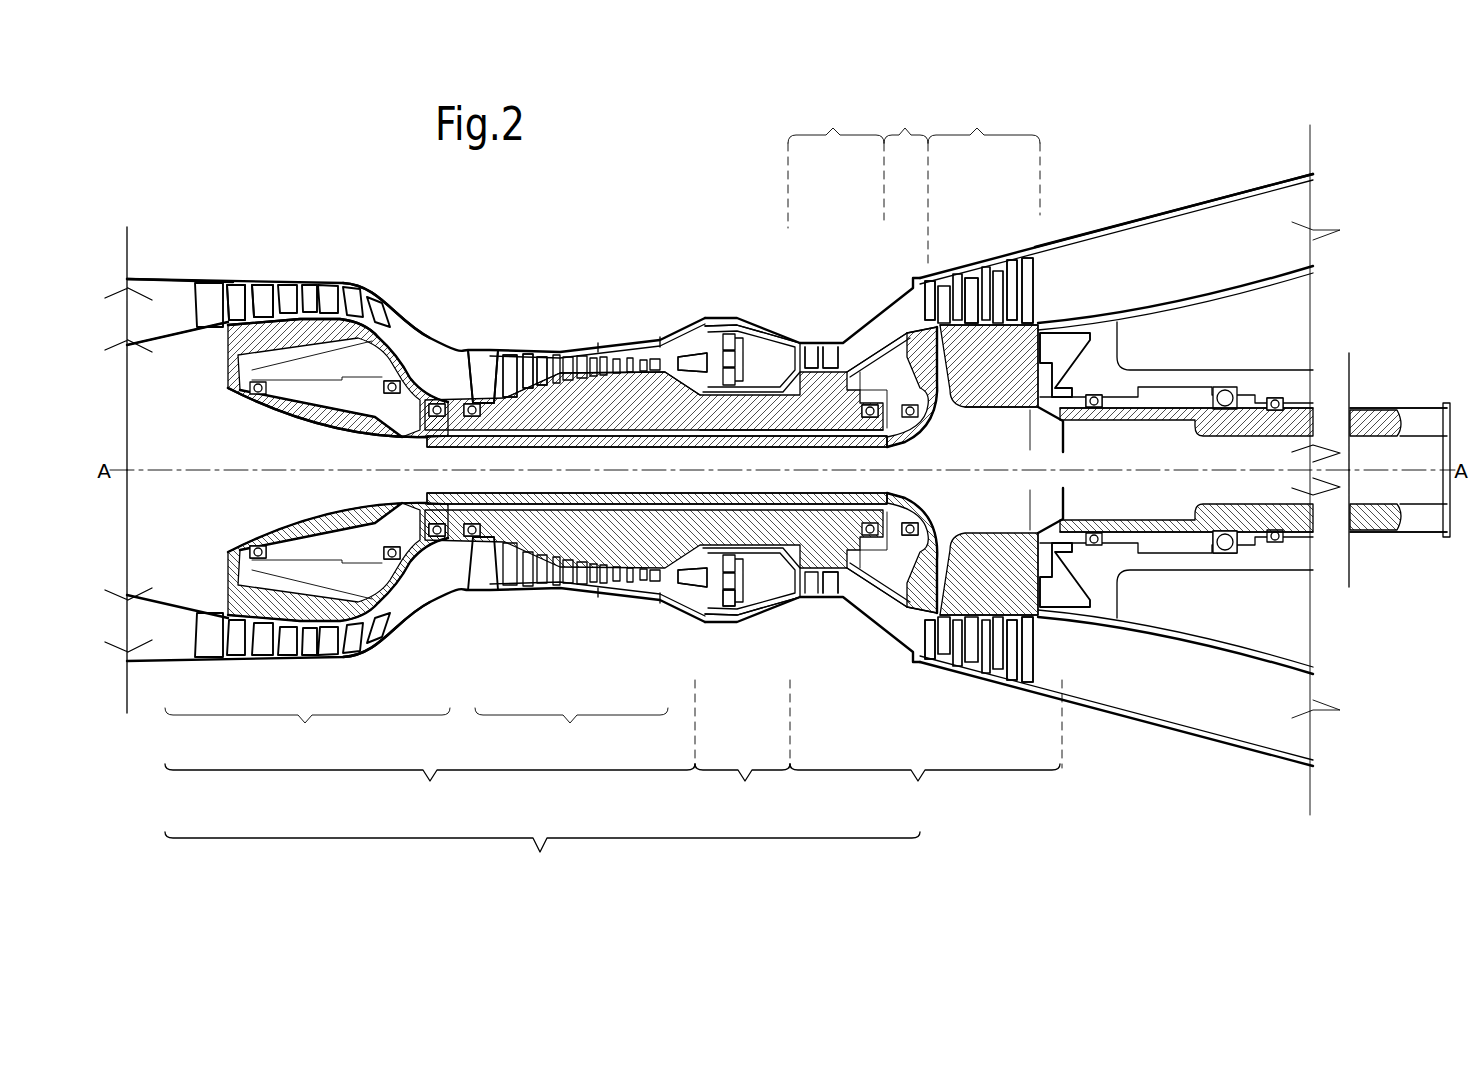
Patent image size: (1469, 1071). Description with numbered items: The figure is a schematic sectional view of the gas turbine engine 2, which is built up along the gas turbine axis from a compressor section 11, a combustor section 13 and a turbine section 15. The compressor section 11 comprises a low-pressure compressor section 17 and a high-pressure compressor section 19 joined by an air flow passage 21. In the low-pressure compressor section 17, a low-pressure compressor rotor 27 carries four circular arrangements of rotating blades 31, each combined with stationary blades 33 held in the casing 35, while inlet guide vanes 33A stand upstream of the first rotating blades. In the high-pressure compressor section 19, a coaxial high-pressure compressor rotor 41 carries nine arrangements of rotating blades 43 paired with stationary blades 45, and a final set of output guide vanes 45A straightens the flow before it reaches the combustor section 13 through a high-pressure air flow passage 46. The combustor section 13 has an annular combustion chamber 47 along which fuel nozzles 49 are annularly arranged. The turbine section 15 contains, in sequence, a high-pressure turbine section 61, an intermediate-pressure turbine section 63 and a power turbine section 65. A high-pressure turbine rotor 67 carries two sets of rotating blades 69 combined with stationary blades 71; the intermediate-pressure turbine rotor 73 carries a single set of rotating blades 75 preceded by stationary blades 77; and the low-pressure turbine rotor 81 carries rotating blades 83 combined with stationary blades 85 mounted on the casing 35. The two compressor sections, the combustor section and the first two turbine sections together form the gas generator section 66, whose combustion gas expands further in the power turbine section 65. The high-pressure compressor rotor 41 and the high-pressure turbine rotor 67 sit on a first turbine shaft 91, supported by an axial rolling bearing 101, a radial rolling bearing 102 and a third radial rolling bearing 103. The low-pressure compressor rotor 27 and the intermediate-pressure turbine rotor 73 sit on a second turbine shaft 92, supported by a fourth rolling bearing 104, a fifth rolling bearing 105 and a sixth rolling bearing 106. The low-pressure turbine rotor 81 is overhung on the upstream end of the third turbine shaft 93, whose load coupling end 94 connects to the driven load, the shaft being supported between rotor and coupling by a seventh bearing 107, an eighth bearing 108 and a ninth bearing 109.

The gas turbine engine 2 is at (646, 158).
The casing 35 is at (148, 278).
The inlet guide vanes 33A is at (190, 283).
The rotating blades 31 is at (237, 292).
The stationary blades 33 is at (262, 290).
The air flow passage 21 is at (398, 332).
The stationary blades 45 is at (462, 365).
The rotating blades 43 is at (495, 354).
The output guide vanes 45A is at (665, 340).
The annular combustion chamber 47 is at (758, 345).
The stationary blades 71 is at (808, 345).
The rotating blades 69 is at (830, 345).
The stationary blades 77 is at (885, 338).
The rotating blades 75 is at (903, 298).
The stationary blades 85 is at (931, 288).
The rotating blades 83 is at (970, 278).
The high-pressure turbine section 61 is at (836, 122).
The intermediate-pressure turbine section 63 is at (906, 122).
The power turbine section 65 is at (984, 122).
The fifth rolling bearing 105 is at (390, 382).
The second radial rolling bearing 102 is at (471, 416).
The low-pressure compressor rotor 27 is at (310, 412).
The high-pressure compressor rotor 41 is at (605, 400).
The first turbine shaft 91 is at (732, 412).
The second turbine shaft 92 is at (893, 442).
The third radial rolling bearing 103 is at (873, 406).
The intermediate-pressure turbine rotor 73 is at (932, 380).
The low-pressure turbine rotor 81 is at (1010, 402).
The seventh bearing 107 is at (1095, 394).
The third turbine shaft 93 is at (1158, 410).
The ninth bearing 109 is at (1275, 397).
The load coupling end 94 is at (1432, 405).
The fourth rolling bearing 104 is at (252, 546).
The first axial rolling bearing 101 is at (432, 525).
The sixth rolling bearing 106 is at (908, 535).
The high-pressure air flow passage 46 is at (713, 602).
The fuel nozzles 49 is at (747, 602).
The high-pressure turbine rotor 67 is at (829, 590).
The eighth bearing 108 is at (1230, 555).
The low-pressure compressor section 17 is at (307, 730).
The high-pressure compressor section 19 is at (571, 730).
The compressor section 11 is at (430, 788).
The combustor section 13 is at (742, 788).
The turbine section 15 is at (925, 788).
The gas generator section 66 is at (542, 856).